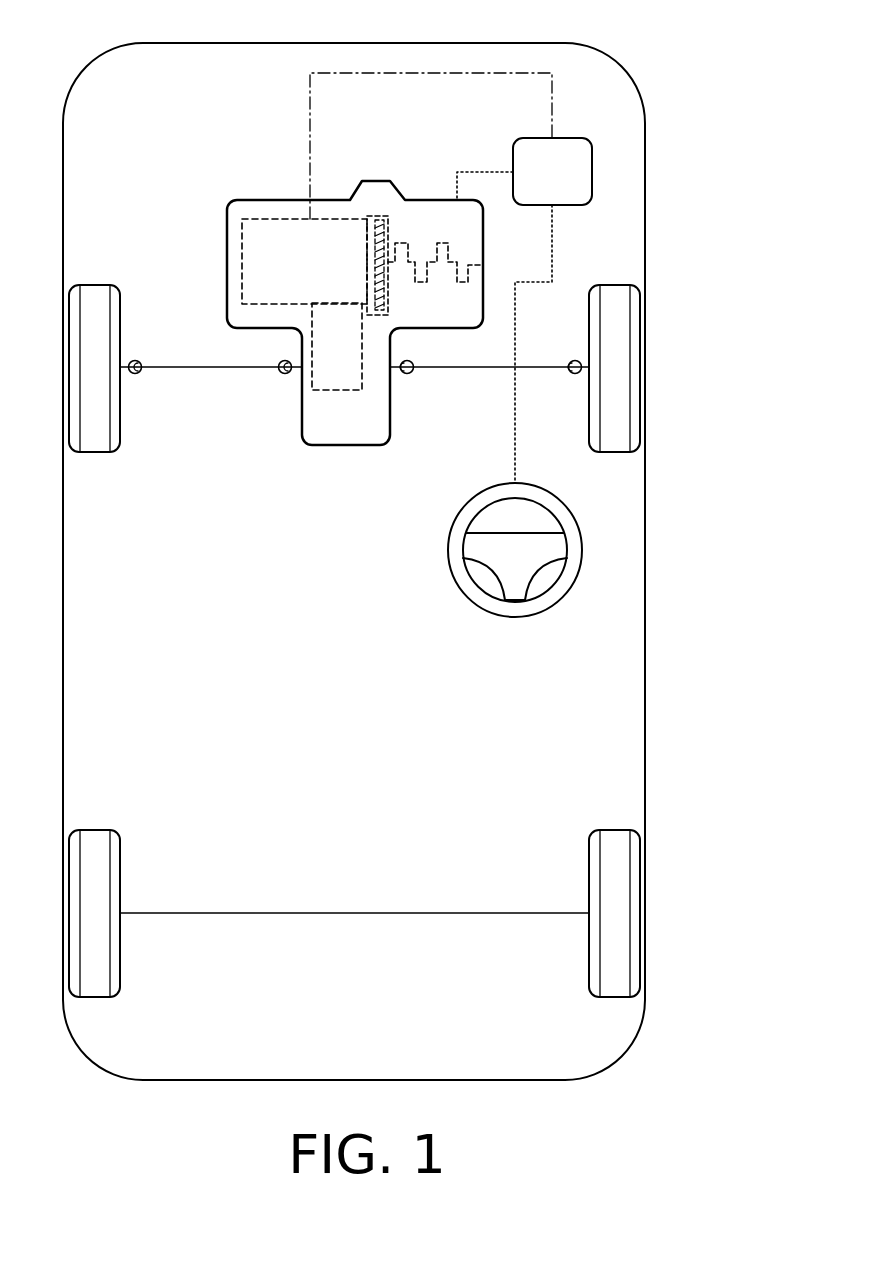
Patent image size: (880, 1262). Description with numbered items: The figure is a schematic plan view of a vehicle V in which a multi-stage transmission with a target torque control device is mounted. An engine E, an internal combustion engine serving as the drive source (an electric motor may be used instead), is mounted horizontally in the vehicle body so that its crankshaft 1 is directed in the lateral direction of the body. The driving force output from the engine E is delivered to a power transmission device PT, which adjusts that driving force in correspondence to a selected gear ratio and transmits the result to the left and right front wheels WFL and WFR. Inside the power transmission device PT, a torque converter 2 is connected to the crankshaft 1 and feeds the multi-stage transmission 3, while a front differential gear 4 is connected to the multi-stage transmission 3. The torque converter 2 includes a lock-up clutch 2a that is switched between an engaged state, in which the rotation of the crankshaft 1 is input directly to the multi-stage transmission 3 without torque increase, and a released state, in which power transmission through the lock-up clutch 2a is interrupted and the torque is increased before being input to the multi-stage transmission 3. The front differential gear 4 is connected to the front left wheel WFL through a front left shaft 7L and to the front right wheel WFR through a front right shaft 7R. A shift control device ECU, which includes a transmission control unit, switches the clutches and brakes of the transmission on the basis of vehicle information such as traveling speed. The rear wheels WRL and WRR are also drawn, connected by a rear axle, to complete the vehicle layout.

The vehicle V is at (617, 63).
The power transmission device PT is at (287, 168).
The engine E is at (430, 200).
The crankshaft 1 is at (415, 282).
The torque converter 2 is at (378, 216).
The lock-up clutch 2a is at (384, 218).
The multi-stage transmission 3 is at (254, 218).
The front differential gear 4 is at (362, 377).
The front left shaft 7L is at (238, 370).
The front right shaft 7R is at (505, 368).
The shift control device ECU is at (578, 187).
The front left wheel WFL is at (96, 305).
The front right wheel WFR is at (613, 295).
The rear left wheel WRL is at (96, 850).
The rear right wheel WRR is at (613, 848).